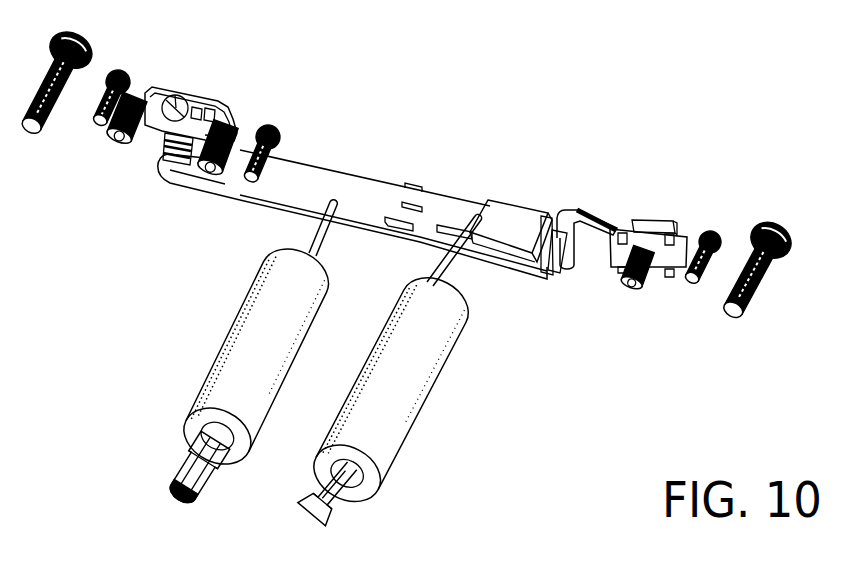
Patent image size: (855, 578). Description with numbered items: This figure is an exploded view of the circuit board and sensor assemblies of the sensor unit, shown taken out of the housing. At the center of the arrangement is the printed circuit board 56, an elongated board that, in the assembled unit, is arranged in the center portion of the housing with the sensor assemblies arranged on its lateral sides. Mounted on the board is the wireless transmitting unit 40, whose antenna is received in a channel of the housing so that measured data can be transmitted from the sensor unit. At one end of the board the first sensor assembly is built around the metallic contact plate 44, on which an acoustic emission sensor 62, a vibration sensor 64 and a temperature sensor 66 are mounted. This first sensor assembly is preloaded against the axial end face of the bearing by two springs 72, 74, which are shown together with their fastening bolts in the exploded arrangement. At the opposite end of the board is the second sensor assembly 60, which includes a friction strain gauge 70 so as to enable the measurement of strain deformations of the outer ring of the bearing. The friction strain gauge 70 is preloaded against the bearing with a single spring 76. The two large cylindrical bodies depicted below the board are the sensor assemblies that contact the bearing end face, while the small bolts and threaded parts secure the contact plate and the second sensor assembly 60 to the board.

The wireless transmitting unit 40 is at (500, 207).
The metallic contact plate 44 is at (200, 139).
The printed circuit board 56 is at (287, 180).
The second sensor assembly 60 is at (648, 227).
The acoustic emission sensor 62 is at (177, 90).
The vibration sensor 64 is at (207, 107).
The temperature sensor 66 is at (217, 110).
The friction strain gauge 70 is at (620, 257).
The spring 72 is at (124, 133).
The spring 74 is at (212, 172).
The spring 76 is at (648, 282).